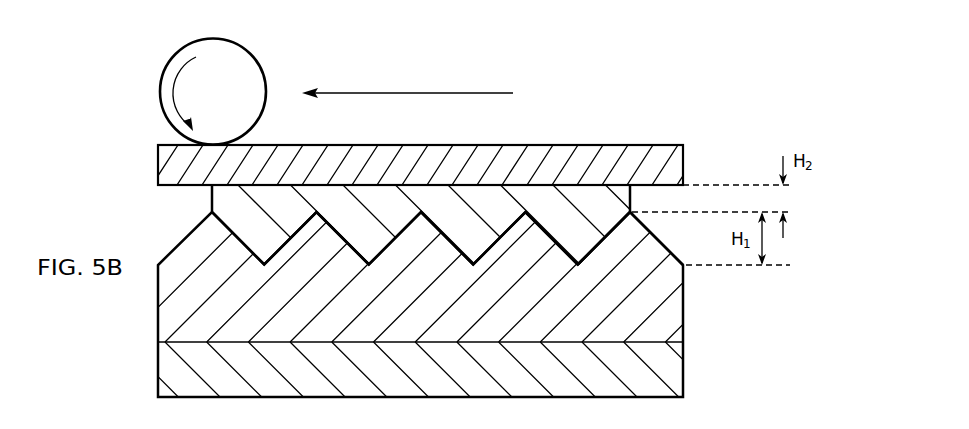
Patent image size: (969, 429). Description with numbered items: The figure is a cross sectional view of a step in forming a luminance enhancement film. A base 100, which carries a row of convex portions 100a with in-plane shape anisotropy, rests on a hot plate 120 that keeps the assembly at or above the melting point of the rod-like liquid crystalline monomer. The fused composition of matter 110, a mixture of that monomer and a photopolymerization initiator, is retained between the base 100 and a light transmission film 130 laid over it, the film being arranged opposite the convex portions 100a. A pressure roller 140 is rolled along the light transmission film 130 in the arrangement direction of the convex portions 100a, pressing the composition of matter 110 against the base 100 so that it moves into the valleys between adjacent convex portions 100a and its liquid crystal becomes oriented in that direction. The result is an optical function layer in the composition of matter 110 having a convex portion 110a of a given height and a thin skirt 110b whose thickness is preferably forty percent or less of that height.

The base 100 is at (675, 303).
The convex portion 100a is at (633, 253).
The composition of matter 110 is at (608, 202).
The convex portion 110a is at (561, 232).
The skirt 110b is at (797, 186).
The hot plate 120 is at (675, 371).
The light transmission film 130 is at (683, 163).
The pressure roller 140 is at (237, 56).